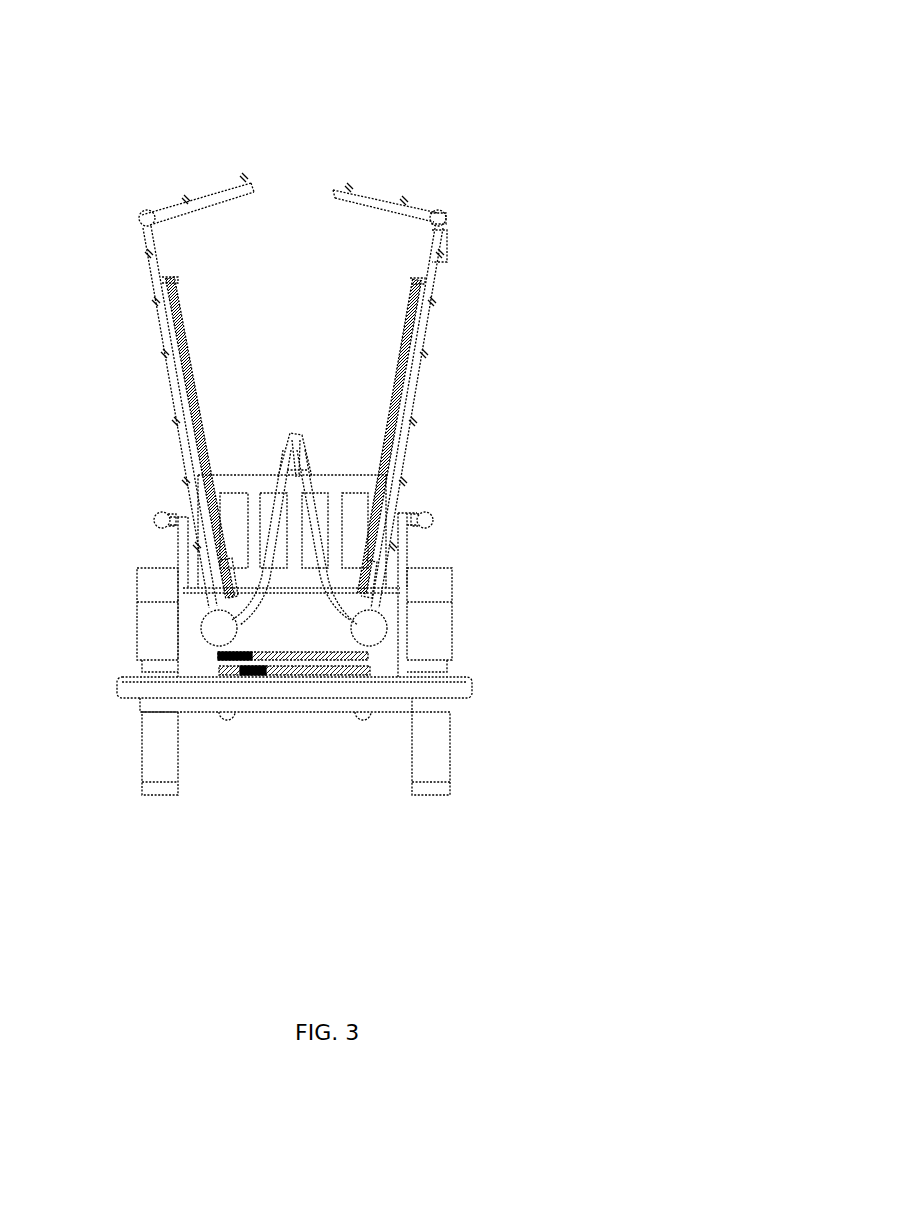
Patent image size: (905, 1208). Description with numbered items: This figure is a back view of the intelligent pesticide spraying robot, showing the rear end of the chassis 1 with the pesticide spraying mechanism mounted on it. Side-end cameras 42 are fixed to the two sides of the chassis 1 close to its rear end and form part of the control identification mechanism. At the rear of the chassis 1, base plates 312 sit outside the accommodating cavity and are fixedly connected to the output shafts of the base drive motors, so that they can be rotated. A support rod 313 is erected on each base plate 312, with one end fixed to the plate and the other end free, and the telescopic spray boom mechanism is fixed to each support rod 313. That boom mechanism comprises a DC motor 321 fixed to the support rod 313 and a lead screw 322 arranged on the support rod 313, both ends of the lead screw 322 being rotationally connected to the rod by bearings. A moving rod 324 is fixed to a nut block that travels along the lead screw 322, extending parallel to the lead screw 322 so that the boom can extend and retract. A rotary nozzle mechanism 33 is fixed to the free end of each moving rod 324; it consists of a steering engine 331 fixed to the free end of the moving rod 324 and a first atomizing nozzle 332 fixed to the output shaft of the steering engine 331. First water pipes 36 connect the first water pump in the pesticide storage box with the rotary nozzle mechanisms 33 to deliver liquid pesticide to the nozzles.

The chassis 1 is at (283, 623).
The side-end camera 42 is at (153, 513).
The first water pipe 36 is at (277, 477).
The base plate 312 is at (367, 628).
The support rod 313 is at (408, 417).
The DC motor 321 is at (410, 585).
The lead screw 322 is at (405, 467).
The moving rod 324 is at (453, 258).
The steering engine 331 is at (458, 208).
The first atomizing nozzle 332 is at (385, 198).
The rotary nozzle mechanism 33 is at (565, 107).